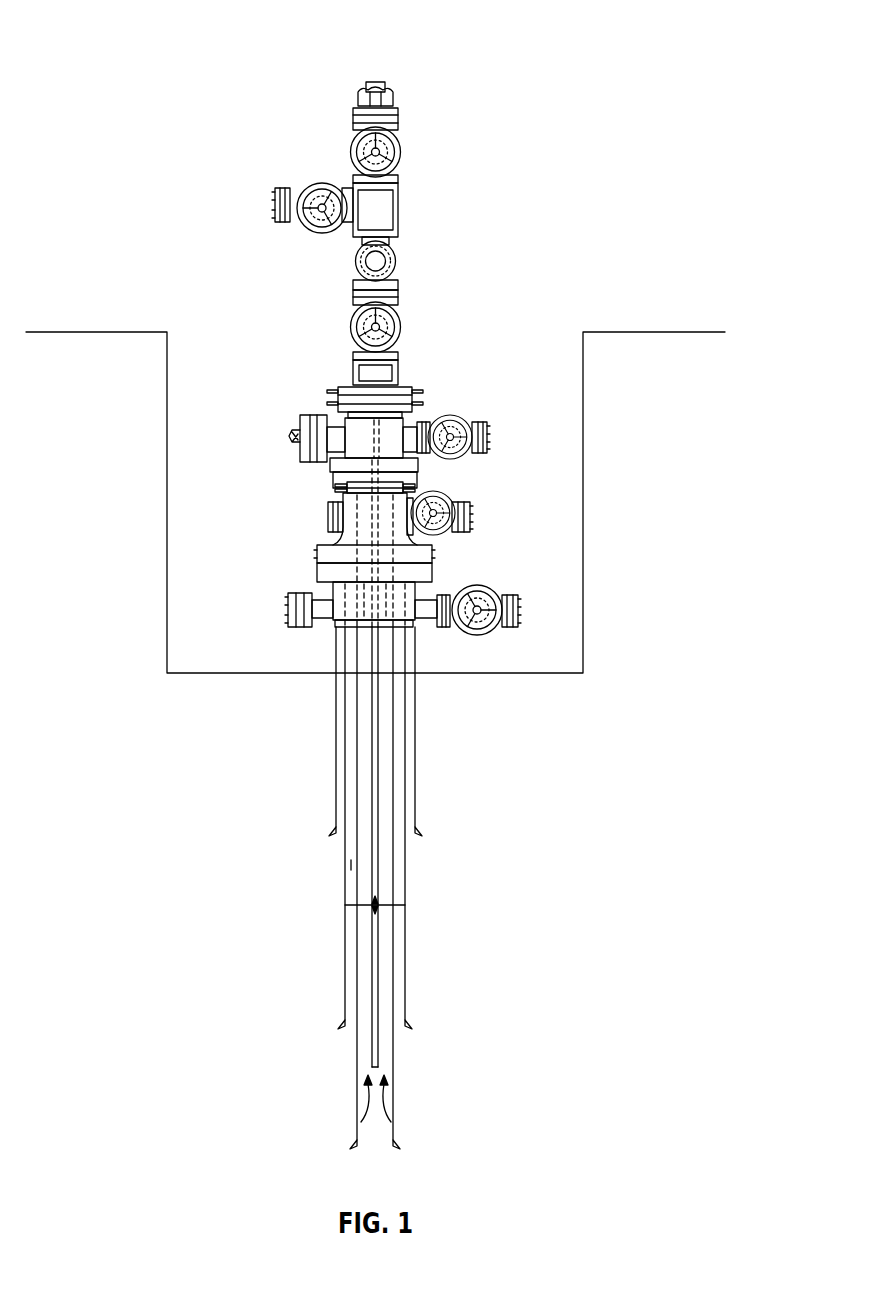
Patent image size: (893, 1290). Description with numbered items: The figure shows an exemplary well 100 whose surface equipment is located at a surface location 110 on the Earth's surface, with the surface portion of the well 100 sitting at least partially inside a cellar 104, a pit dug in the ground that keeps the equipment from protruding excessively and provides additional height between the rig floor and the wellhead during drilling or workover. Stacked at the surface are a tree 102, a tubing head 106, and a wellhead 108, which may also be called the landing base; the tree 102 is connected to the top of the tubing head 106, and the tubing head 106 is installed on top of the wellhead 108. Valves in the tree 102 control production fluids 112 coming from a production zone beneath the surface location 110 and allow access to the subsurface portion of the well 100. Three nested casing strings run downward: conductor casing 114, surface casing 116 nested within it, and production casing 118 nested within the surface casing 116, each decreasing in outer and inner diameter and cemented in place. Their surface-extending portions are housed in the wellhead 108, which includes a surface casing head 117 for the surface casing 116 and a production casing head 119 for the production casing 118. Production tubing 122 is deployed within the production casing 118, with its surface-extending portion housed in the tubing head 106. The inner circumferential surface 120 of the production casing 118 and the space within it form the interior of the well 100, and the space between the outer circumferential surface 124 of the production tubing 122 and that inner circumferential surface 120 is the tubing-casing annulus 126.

The well 100 is at (127, 43).
The tree 102 is at (350, 187).
The cellar 104 is at (527, 295).
The tubing head 106 is at (322, 413).
The wellhead 108 is at (533, 646).
The surface location 110 is at (716, 308).
The production fluids 112 is at (385, 1098).
The conductor casing 114 is at (415, 793).
The surface casing 116 is at (405, 948).
The surface casing head 117 is at (290, 607).
The production casing 118 is at (393, 997).
The production casing head 119 is at (328, 521).
The inner circumferential surface 120 is at (357, 1000).
The production tubing 122 is at (378, 1057).
The outer circumferential surface 124 is at (372, 945).
The tubing-casing annulus 126 is at (350, 843).